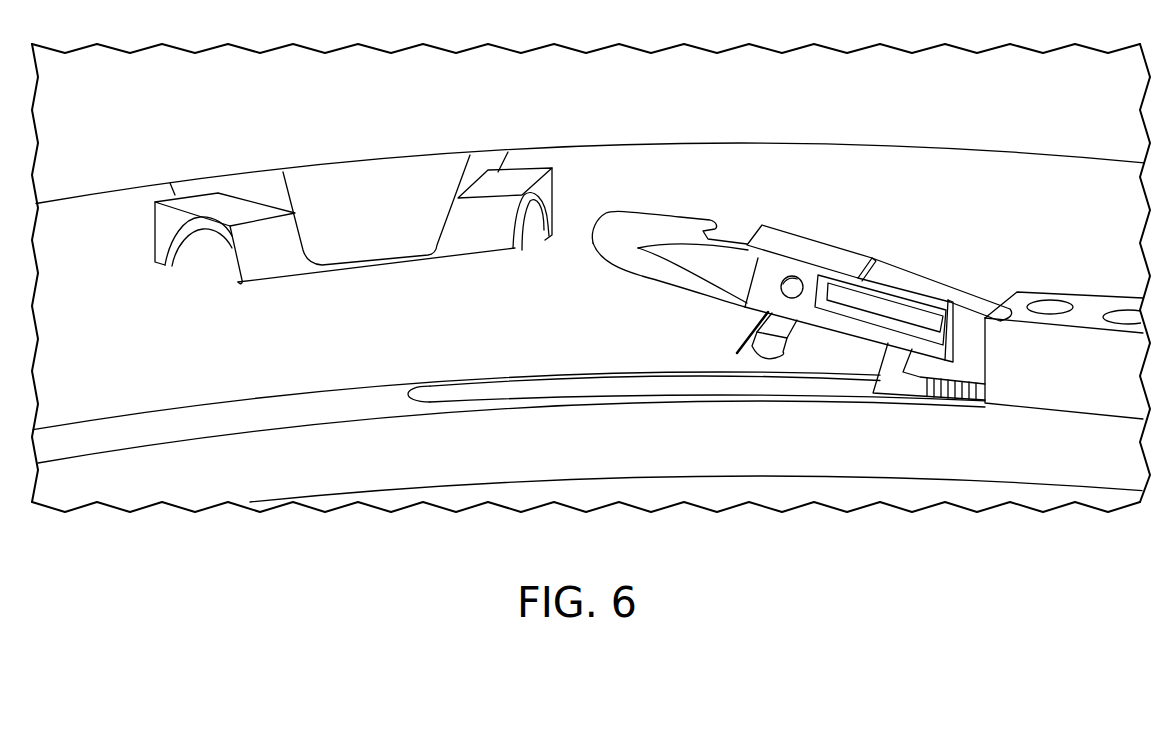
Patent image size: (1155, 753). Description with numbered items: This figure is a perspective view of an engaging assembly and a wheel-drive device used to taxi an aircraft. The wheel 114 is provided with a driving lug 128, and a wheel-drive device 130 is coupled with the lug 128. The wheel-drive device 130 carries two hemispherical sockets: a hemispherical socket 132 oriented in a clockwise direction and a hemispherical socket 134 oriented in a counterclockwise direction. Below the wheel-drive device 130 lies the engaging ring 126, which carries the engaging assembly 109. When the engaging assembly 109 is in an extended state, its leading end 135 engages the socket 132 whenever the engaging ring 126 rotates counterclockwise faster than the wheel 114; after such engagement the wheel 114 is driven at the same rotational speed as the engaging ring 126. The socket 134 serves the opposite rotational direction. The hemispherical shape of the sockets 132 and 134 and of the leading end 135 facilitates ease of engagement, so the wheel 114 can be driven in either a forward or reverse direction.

The wheel 114 is at (285, 72).
The engaging ring 126 is at (347, 398).
The driving lug 128 is at (387, 180).
The wheel-drive device 130 is at (436, 268).
The hemispherical socket 132 is at (530, 238).
The hemispherical socket 134 is at (205, 259).
The leading end 135 is at (595, 222).
The engaging assembly 109 is at (930, 285).